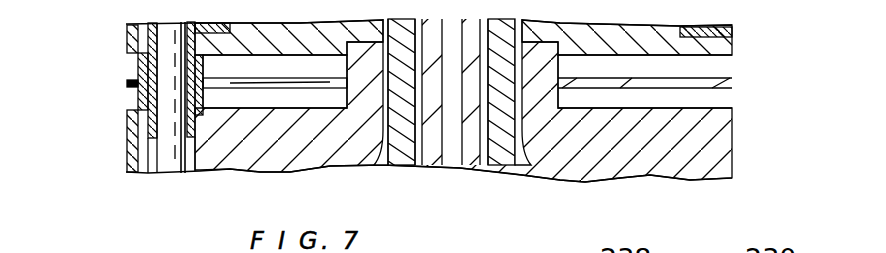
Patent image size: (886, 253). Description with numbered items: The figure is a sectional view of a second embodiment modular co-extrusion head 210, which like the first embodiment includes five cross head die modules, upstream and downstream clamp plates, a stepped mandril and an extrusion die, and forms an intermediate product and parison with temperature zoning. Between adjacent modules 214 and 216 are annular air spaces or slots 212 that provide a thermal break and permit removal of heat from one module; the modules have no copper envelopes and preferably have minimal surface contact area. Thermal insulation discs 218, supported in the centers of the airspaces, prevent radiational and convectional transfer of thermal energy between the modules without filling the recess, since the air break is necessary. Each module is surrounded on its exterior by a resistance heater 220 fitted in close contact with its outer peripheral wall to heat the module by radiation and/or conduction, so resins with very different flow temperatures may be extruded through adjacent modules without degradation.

The modular co-extrusion head 210 is at (753, 21).
The annular air spaces 212 is at (720, 67).
The module 214 is at (732, 165).
The module 216 is at (733, 48).
The thermal insulation discs 218 is at (732, 87).
The resistance heater 220 is at (128, 50).